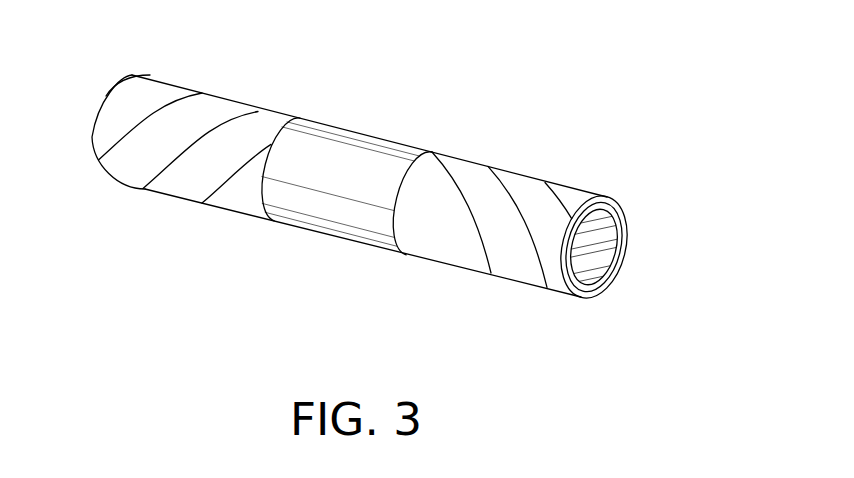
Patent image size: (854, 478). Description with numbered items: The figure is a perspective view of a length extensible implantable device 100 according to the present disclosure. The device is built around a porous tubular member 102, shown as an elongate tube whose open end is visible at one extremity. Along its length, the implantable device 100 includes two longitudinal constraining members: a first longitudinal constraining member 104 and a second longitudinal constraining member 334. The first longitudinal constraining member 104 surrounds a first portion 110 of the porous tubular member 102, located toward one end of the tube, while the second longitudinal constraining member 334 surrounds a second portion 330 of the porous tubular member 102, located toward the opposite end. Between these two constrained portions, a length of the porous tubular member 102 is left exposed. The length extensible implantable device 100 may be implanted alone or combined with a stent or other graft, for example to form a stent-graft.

The length extensible implantable device 100 is at (447, 80).
The porous tubular member 102 is at (628, 252).
The first longitudinal constraining member 104 is at (203, 110).
The first portion 110 is at (263, 245).
The second portion 330 is at (568, 318).
The second longitudinal constraining member 334 is at (465, 183).